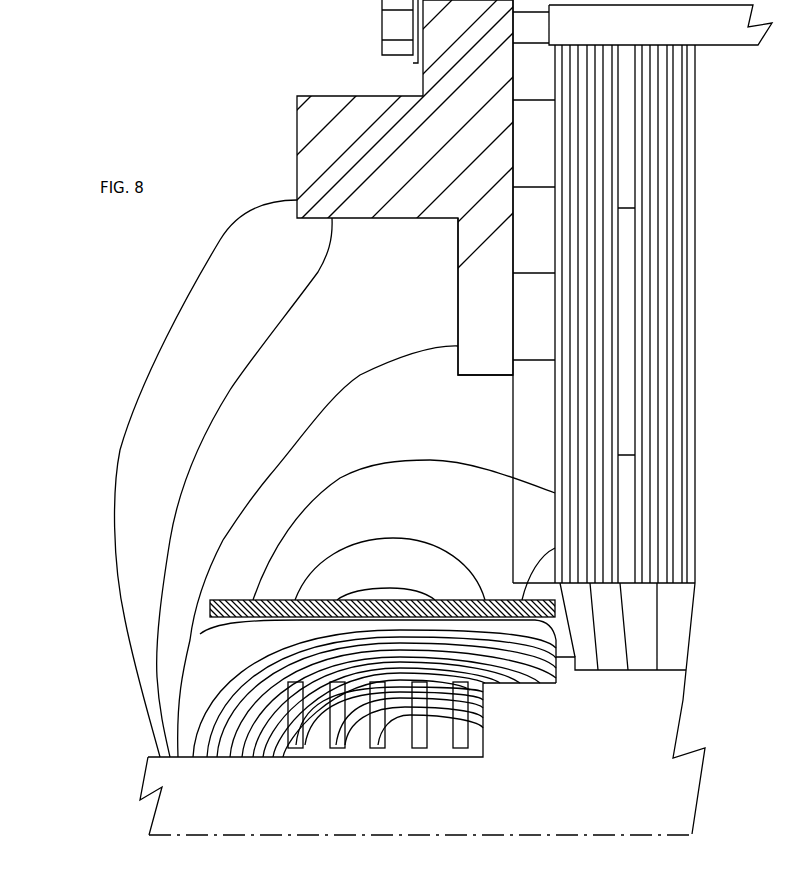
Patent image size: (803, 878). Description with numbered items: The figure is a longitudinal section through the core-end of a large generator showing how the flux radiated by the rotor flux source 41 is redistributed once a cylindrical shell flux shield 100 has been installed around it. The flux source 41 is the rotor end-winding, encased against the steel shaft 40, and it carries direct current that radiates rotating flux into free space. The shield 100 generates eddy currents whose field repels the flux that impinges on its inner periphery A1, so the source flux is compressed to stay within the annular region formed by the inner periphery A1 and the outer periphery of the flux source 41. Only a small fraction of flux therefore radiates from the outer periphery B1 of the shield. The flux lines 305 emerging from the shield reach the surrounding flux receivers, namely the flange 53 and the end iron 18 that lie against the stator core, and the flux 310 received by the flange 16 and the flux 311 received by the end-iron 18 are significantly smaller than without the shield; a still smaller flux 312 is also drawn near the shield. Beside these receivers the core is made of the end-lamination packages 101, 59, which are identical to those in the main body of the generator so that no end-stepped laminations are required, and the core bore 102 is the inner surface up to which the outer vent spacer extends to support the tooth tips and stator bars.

The flange 53 is at (297, 115).
The flange 16 is at (458, 305).
The bore of the core 102 is at (513, 445).
The end-iron 18 is at (555, 540).
The end-lamination package 59 is at (700, 440).
The end-lamination package 101 is at (668, 585).
The flux lines 305 is at (112, 391).
The flux 310 is at (340, 393).
The flux 311 is at (397, 465).
The flux line 312 is at (385, 588).
The flux shield 100 is at (282, 598).
The outer periphery of flux shield B1 is at (250, 602).
The inner periphery of flux shield A1 is at (200, 634).
The steel shaft 40 is at (322, 757).
The flux-source 41 is at (470, 735).